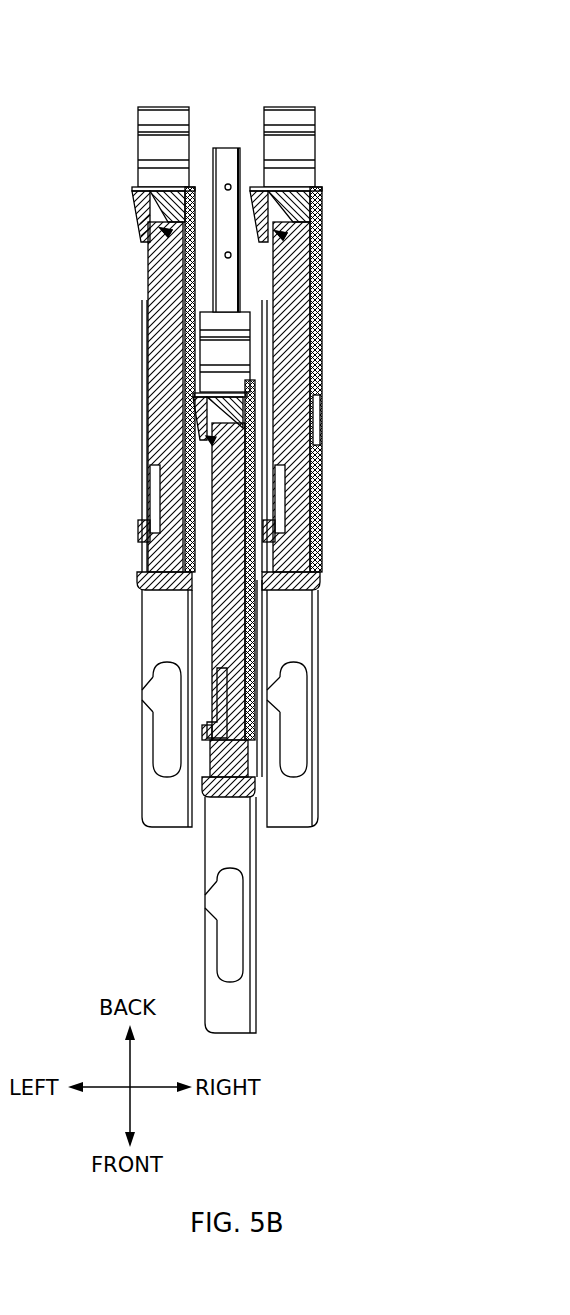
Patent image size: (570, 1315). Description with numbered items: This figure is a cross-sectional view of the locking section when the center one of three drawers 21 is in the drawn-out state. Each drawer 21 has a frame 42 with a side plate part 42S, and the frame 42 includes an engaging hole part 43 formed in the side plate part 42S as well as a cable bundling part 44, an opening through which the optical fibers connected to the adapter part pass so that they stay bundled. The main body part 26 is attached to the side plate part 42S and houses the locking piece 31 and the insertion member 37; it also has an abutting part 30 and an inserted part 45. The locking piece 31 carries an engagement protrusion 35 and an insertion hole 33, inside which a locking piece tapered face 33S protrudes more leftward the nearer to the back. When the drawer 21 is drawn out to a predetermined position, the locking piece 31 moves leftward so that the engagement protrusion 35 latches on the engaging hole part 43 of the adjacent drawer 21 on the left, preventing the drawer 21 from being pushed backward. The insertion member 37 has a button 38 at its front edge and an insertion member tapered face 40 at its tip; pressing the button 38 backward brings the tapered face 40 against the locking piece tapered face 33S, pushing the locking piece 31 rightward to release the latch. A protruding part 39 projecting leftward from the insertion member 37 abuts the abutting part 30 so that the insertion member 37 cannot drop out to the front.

The drawer 21 is at (307, 81).
The inserted part 45 is at (165, 113).
The engagement protrusion 35 is at (238, 152).
The locking piece 31 is at (152, 187).
The main body part 26 is at (322, 312).
The insertion member tapered face 40 is at (322, 246).
The engaging hole part 43 is at (320, 417).
The side plate part 42S is at (322, 341).
The locking piece tapered face 33S is at (150, 227).
The insertion hole 33 is at (166, 246).
The protruding part 39 is at (150, 508).
The abutting part 30 is at (140, 531).
The insertion member 37 is at (200, 395).
The button 38 is at (245, 600).
The frame 42 is at (160, 800).
The cable bundling part 44 is at (295, 720).